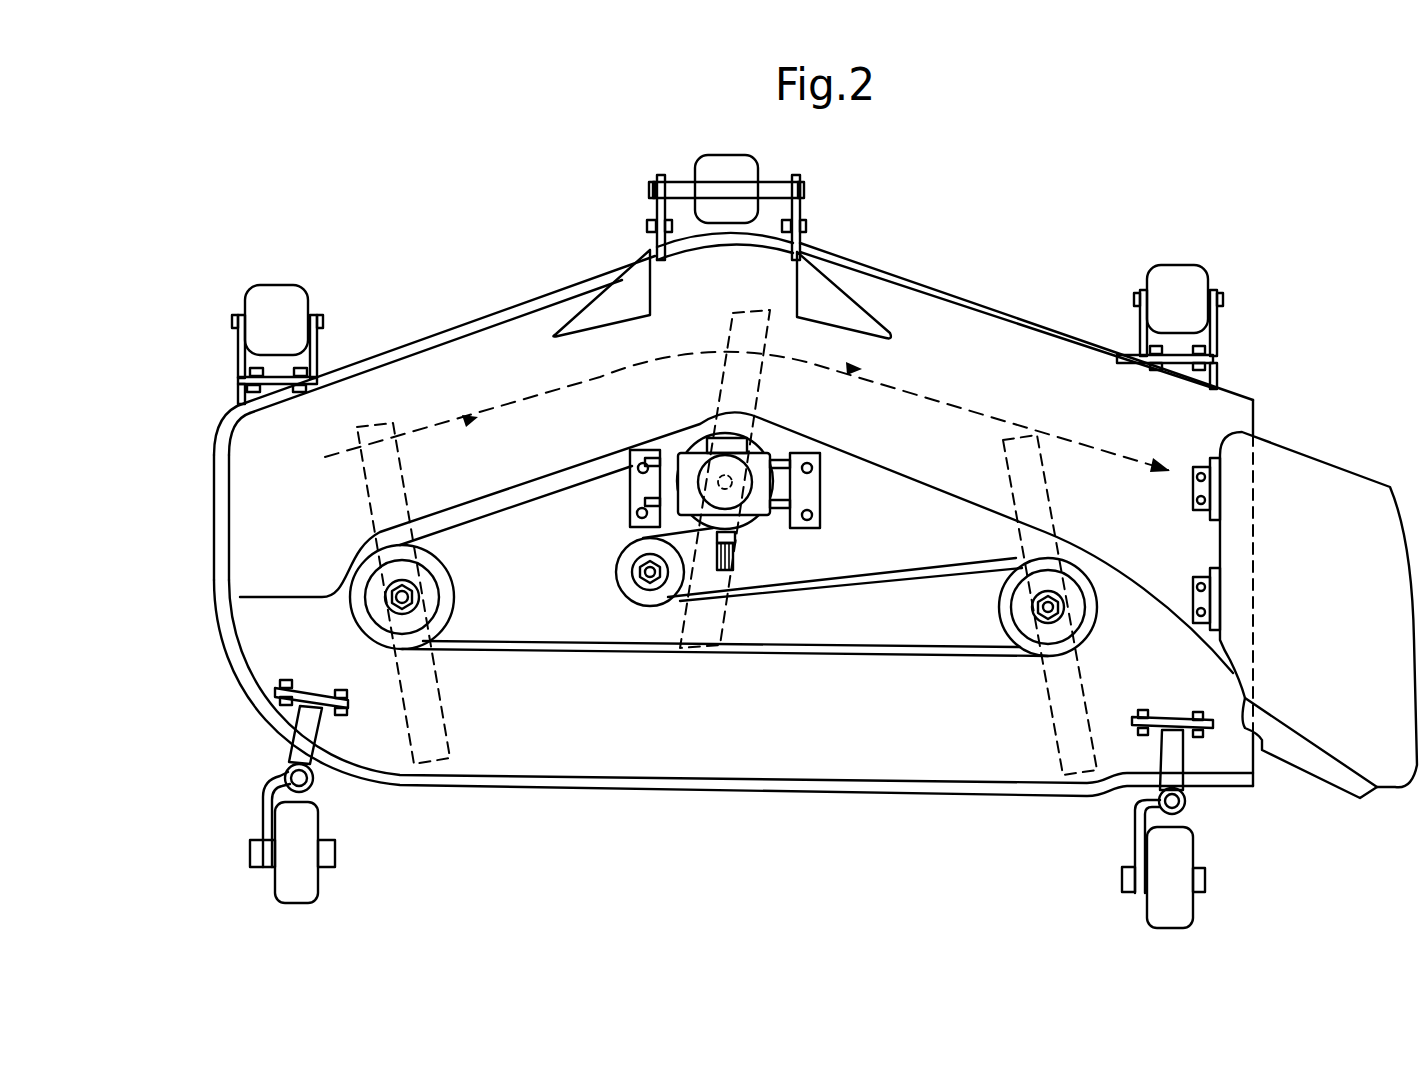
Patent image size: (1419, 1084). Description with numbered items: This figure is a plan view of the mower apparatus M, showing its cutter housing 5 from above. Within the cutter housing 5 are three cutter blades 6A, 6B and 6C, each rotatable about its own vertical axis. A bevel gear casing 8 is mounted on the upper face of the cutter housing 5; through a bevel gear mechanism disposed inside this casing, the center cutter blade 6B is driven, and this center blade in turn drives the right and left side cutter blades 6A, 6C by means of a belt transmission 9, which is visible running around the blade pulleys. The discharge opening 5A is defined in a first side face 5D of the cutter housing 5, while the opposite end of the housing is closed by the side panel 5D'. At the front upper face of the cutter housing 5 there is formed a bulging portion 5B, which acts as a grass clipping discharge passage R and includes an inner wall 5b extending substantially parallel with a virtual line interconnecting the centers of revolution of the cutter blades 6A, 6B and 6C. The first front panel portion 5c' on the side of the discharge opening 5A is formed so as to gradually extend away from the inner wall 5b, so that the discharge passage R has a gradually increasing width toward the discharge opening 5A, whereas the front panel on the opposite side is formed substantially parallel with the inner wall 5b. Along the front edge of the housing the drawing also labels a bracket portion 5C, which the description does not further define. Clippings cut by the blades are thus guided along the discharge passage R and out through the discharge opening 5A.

The mower apparatus M is at (396, 236).
The cutter housing 5 is at (938, 328).
The discharge opening 5A is at (1254, 611).
The bulging portion 5B is at (455, 373).
The roller support bracket 5C is at (538, 298).
The first side face 5D is at (1296, 593).
The side panel 5D' is at (192, 517).
The first front panel portion 5c' is at (1026, 321).
The inner wall 5b is at (478, 500).
The cutter blade 6A is at (440, 722).
The center cutter blade 6B is at (722, 612).
The cutter blade 6C is at (1053, 716).
The bevel gear casing 8 is at (748, 460).
The belt transmission 9 is at (612, 648).
The grass clipping discharge passage R is at (550, 393).